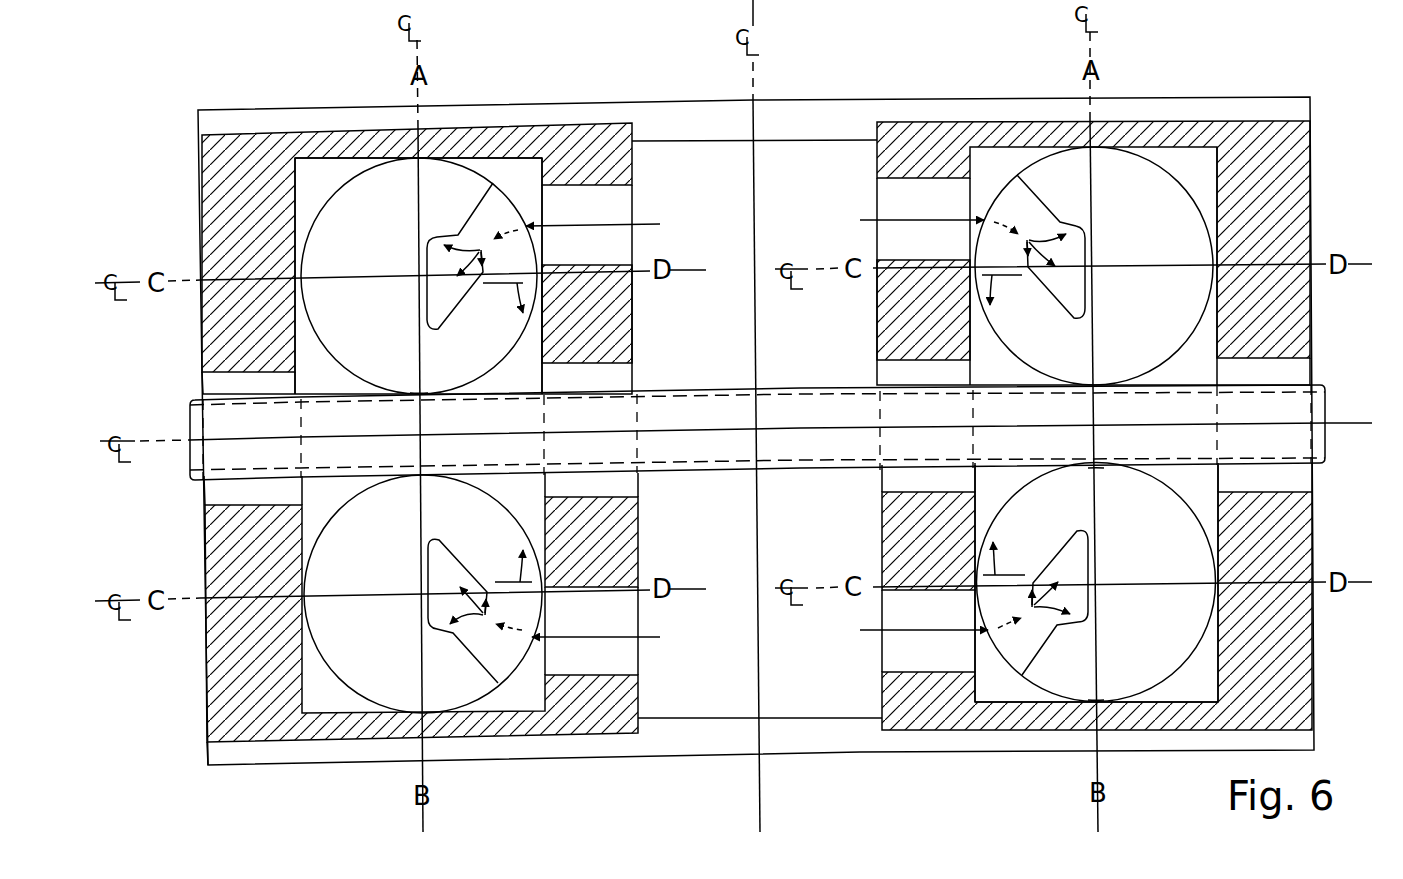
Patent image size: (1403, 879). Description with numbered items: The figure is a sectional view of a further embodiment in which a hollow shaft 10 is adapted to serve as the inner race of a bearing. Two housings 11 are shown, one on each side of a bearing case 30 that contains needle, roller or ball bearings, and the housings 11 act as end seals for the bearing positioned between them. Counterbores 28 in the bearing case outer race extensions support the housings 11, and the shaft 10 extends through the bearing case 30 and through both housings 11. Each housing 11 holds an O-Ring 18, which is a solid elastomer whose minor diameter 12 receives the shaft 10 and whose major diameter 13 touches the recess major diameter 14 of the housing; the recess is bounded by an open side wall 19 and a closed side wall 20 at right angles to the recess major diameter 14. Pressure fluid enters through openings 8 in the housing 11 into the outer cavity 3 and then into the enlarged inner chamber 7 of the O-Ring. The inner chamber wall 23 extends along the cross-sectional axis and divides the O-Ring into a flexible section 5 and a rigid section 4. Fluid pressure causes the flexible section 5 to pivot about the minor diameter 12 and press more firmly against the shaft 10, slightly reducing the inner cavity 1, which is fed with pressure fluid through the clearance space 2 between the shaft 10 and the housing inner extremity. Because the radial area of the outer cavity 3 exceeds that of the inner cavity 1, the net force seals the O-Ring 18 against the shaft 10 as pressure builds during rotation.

The inner cavity 1 is at (528, 388).
The clearance space 2 is at (607, 384).
The outer cavity 3 is at (532, 217).
The rigid section 4 is at (312, 220).
The flexible section 5 is at (754, 428).
The inner chamber 7 is at (438, 320).
The openings 8 is at (613, 217).
The shaft 10 is at (513, 425).
The housing 11 is at (613, 172).
The minor diameter 12 is at (420, 393).
The major diameter 13 is at (417, 160).
The recess major diameter 14 is at (328, 172).
The O-Ring 18 is at (377, 267).
The recess open side wall 19 is at (538, 332).
The recess closed side wall 20 is at (301, 345).
The inner chamber wall 23 is at (423, 287).
The counterbores 28 is at (333, 130).
The bearing case 30 is at (812, 133).